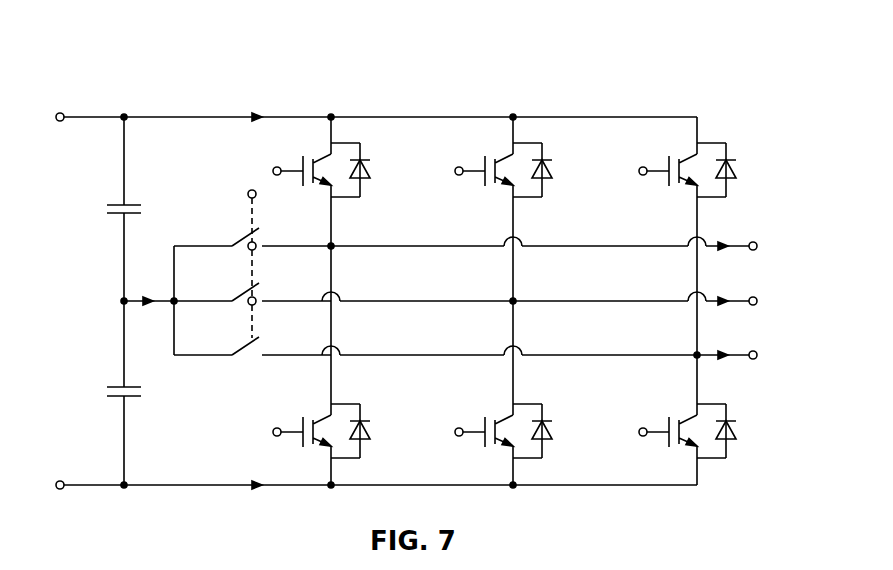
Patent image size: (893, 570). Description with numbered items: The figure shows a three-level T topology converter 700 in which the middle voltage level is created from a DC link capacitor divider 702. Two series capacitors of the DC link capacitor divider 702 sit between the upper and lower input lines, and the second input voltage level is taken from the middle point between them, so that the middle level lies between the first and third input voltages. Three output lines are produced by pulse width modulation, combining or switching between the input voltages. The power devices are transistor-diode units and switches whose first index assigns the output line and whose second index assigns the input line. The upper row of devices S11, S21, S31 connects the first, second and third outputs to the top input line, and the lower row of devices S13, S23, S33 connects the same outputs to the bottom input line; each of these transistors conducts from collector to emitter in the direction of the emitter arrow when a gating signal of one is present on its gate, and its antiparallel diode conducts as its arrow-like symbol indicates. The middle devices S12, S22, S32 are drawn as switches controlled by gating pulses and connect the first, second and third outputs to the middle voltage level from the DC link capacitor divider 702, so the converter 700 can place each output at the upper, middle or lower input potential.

The three-level T topology converter 700 is at (418, 250).
The DC link capacitor divider 702 is at (97, 260).
The power device S11 is at (345, 170).
The power device S21 is at (526, 170).
The power device S31 is at (710, 170).
The power device S12 is at (252, 232).
The power device S22 is at (252, 286).
The power device S32 is at (252, 339).
The power device S13 is at (345, 431).
The power device S23 is at (526, 431).
The power device S33 is at (710, 431).